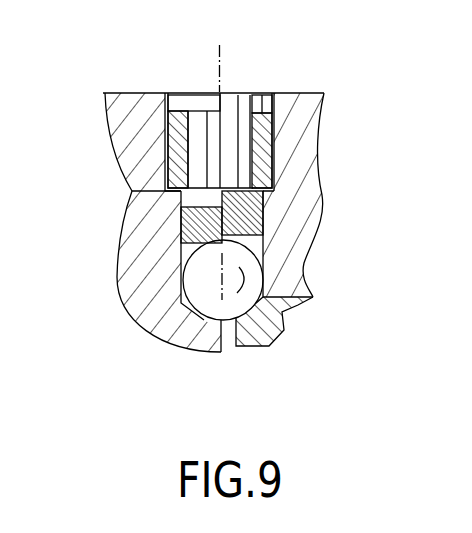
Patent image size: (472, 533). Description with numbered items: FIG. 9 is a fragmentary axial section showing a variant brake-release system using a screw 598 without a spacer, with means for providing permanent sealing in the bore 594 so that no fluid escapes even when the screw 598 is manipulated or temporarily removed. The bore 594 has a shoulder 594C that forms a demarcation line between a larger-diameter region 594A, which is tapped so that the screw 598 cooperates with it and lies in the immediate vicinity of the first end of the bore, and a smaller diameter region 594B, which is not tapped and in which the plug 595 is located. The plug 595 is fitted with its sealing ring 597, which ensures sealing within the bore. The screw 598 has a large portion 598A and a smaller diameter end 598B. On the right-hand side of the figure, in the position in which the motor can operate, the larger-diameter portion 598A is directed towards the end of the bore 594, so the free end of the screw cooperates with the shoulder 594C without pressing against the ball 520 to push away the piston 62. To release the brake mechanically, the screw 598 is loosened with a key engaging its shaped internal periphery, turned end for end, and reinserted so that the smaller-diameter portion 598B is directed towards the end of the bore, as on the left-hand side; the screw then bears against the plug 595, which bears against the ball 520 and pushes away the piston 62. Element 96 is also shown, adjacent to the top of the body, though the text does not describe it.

The bore 594 is at (313, 173).
The larger-diameter region 594A is at (165, 123).
The smaller diameter region 594B is at (265, 216).
The shoulder 594C is at (181, 192).
The plug 595 is at (118, 282).
The sealing ring 597 is at (181, 223).
The screw 598 is at (195, 116).
The large portion 598A is at (259, 117).
The smaller diameter end 598B is at (250, 111).
The upper plate 96 is at (308, 128).
The piston 62 is at (279, 323).
The ball 520 is at (197, 294).